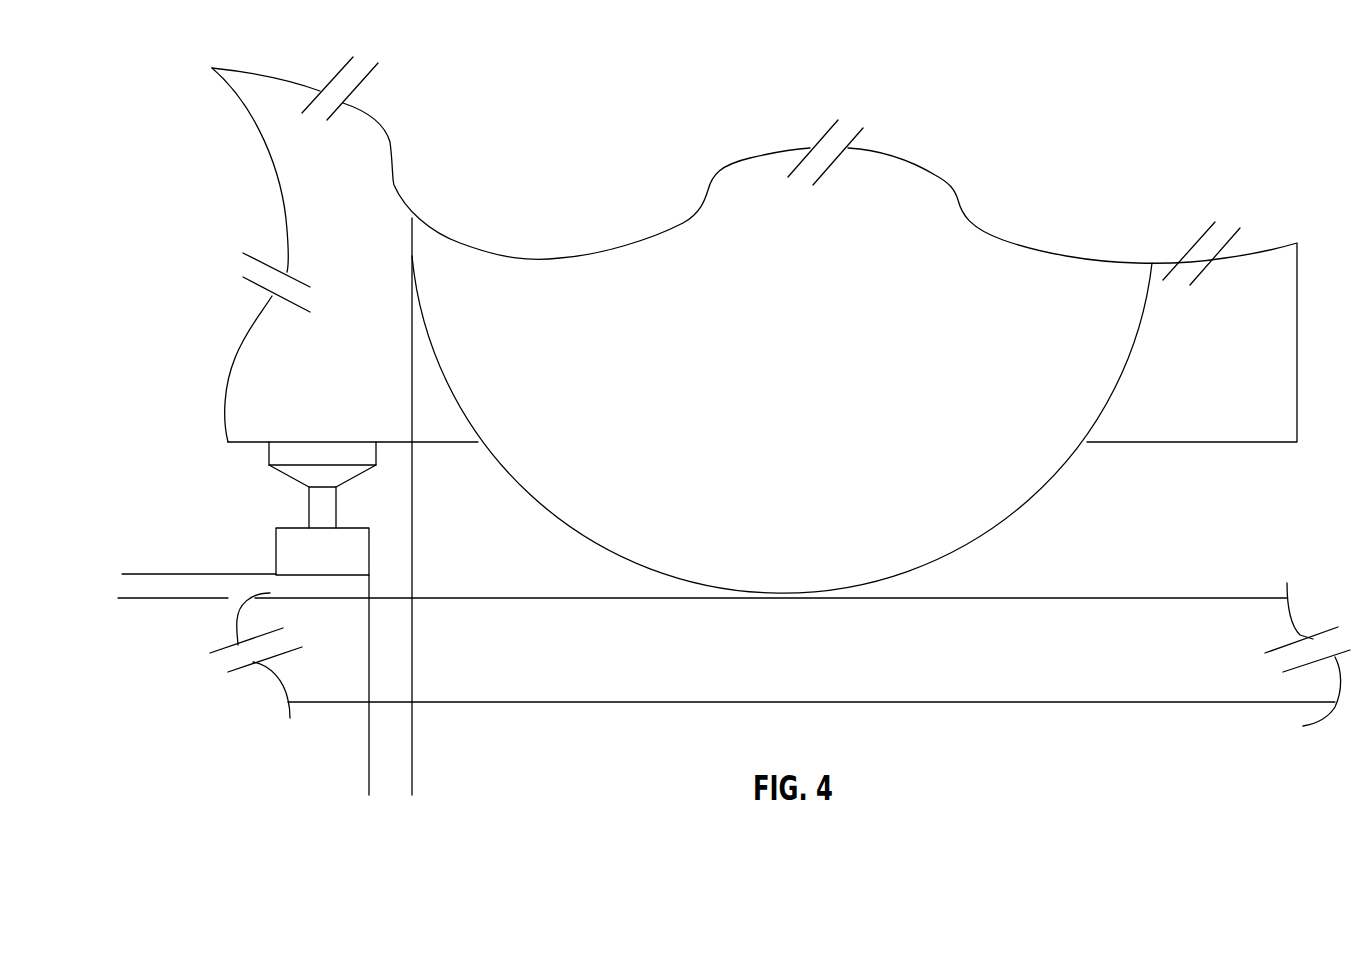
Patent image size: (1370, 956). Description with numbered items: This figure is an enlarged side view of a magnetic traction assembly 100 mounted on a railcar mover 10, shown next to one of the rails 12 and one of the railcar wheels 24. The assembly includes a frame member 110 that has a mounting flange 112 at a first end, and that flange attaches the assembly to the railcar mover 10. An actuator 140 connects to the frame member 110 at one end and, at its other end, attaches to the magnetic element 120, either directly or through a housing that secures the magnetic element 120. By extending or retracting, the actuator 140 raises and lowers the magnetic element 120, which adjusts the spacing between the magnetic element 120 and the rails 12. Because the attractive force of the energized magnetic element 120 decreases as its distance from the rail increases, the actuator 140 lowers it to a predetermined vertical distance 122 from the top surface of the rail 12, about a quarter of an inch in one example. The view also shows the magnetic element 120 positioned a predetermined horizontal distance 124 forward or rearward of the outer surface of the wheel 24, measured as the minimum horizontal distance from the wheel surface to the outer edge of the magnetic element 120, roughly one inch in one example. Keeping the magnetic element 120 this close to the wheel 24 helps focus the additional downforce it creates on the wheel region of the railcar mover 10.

The railcar mover 10 is at (282, 323).
The rails 12 is at (898, 663).
The railcar wheel 24 is at (732, 505).
The magnetic traction assembly 100 is at (272, 503).
The frame member 110 is at (308, 452).
The mounting flange 112 is at (325, 478).
The magnetic element 120 is at (318, 557).
The predetermined vertical distance 122 is at (149, 513).
The predetermined horizontal distance 124 is at (307, 769).
The actuator 140 is at (325, 525).